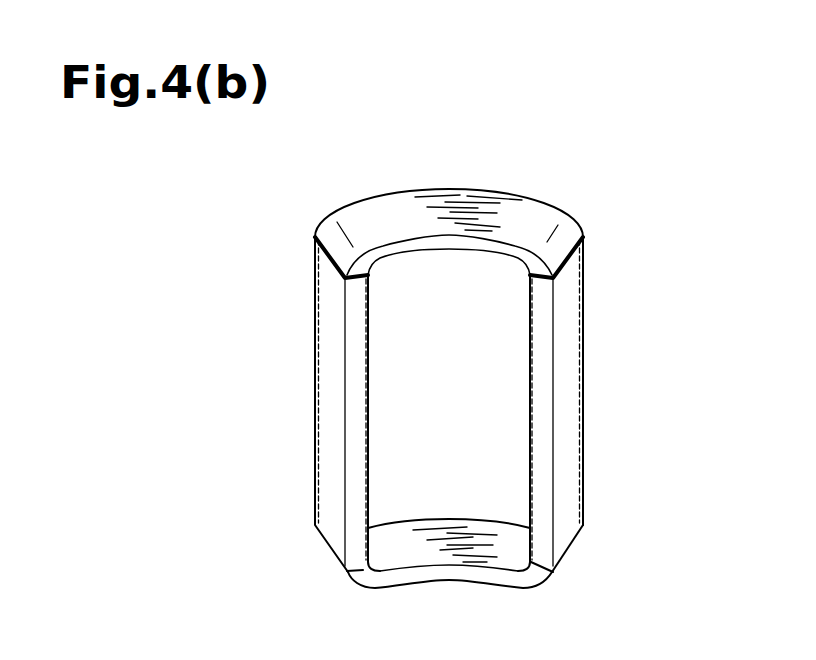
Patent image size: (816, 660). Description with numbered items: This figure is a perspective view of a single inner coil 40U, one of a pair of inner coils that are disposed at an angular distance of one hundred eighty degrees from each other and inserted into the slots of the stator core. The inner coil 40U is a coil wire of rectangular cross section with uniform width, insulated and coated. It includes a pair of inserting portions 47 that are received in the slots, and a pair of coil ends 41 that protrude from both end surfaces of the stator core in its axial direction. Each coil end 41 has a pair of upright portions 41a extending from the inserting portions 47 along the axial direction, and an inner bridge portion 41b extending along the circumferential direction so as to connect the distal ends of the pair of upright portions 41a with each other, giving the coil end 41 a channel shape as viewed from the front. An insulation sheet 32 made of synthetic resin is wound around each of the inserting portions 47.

The inner coil 40U is at (571, 164).
The coil end 41 is at (378, 202).
The upright portion 41a is at (330, 256).
The inner bridge portion 41b is at (460, 198).
The insulation sheet 32 is at (326, 394).
The inserting portion 47 is at (587, 333).